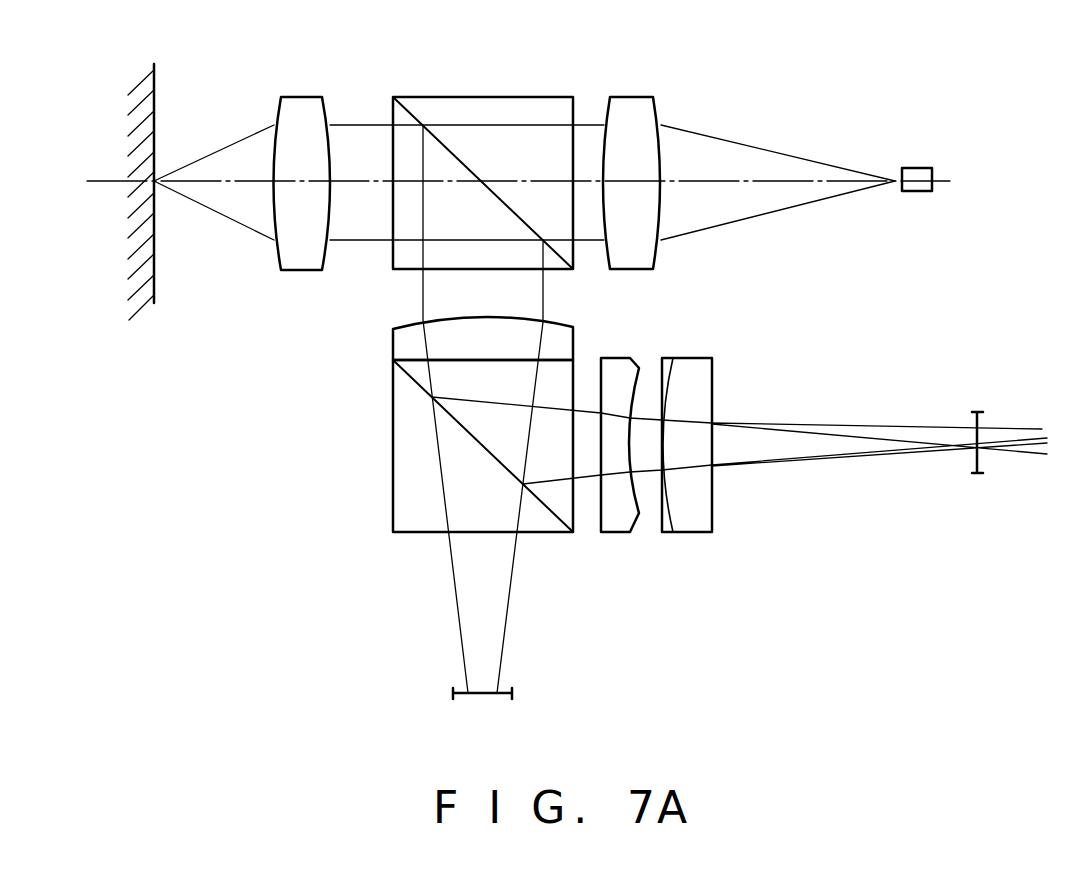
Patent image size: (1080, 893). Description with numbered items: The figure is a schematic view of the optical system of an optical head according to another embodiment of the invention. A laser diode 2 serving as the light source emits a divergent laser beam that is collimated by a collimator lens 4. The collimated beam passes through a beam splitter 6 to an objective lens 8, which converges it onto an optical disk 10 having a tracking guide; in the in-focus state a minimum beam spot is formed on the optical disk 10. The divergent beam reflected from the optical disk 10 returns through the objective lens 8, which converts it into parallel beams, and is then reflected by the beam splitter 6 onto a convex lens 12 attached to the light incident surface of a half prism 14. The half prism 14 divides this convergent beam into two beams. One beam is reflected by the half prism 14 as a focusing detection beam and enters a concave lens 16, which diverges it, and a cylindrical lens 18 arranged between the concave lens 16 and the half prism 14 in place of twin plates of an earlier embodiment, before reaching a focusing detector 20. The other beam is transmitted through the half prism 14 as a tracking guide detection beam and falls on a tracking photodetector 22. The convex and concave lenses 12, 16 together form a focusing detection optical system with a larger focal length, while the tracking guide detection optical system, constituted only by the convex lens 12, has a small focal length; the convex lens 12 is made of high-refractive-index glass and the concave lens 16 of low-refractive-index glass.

The laser diode 2 is at (915, 168).
The collimator lens 4 is at (632, 97).
The beam splitter 6 is at (499, 96).
The objective lens 8 is at (304, 100).
The optical disk 10 is at (163, 84).
The convex lens 12 is at (567, 333).
The half prism 14 is at (403, 487).
The concave lens 16 is at (618, 523).
The cylindrical lens 18 is at (688, 523).
The focusing detector 20 is at (979, 455).
The tracking photodetector 22 is at (485, 700).